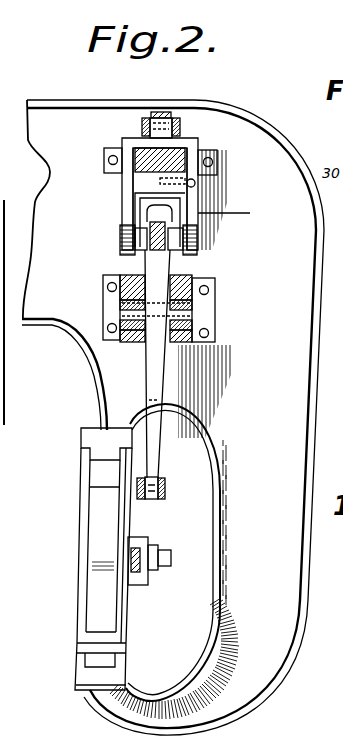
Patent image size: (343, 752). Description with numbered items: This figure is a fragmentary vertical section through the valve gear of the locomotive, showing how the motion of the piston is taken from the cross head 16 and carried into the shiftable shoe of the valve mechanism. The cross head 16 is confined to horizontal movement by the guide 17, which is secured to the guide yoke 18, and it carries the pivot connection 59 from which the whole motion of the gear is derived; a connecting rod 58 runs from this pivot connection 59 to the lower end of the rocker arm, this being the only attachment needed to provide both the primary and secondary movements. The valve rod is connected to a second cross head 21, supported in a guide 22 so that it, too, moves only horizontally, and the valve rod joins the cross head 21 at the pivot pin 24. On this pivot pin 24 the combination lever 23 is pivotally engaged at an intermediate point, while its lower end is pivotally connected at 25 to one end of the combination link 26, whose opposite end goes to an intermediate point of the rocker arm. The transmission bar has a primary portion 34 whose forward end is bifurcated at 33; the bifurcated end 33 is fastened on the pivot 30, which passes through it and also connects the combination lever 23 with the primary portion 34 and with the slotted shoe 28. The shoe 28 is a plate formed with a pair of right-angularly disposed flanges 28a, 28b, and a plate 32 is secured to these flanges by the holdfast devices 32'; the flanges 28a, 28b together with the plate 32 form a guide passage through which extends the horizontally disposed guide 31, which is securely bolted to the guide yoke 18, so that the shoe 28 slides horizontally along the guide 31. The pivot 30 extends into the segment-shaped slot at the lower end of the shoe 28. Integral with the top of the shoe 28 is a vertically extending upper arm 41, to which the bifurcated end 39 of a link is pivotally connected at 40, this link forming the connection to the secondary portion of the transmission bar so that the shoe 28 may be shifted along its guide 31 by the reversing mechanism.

The cross head 16 is at (100, 474).
The guide 17 is at (95, 438).
The guide yoke 18 is at (197, 552).
The cross head 21 is at (104, 298).
The guide 22 is at (196, 280).
The combination lever 23 is at (156, 376).
The pivot pin 24 is at (205, 309).
The pivotal connection 25 is at (165, 490).
The combination link 26 is at (160, 500).
The shiftable shoe 28 is at (134, 208).
The flange 28a is at (190, 146).
The flange 28b is at (136, 186).
The pivot 30 is at (120, 234).
The guide 31 is at (135, 157).
The plate 32 is at (235, 213).
The holdfast device 32' is at (224, 186).
The bifurcated end 33 is at (197, 229).
The primary portion of transmission bar 34 is at (158, 243).
The bifurcated end of link 39 is at (142, 124).
The pivotal connection 40 is at (180, 128).
The upper arm 41 is at (162, 113).
The connecting rod 58 is at (140, 586).
The pivot connection 59 is at (170, 565).